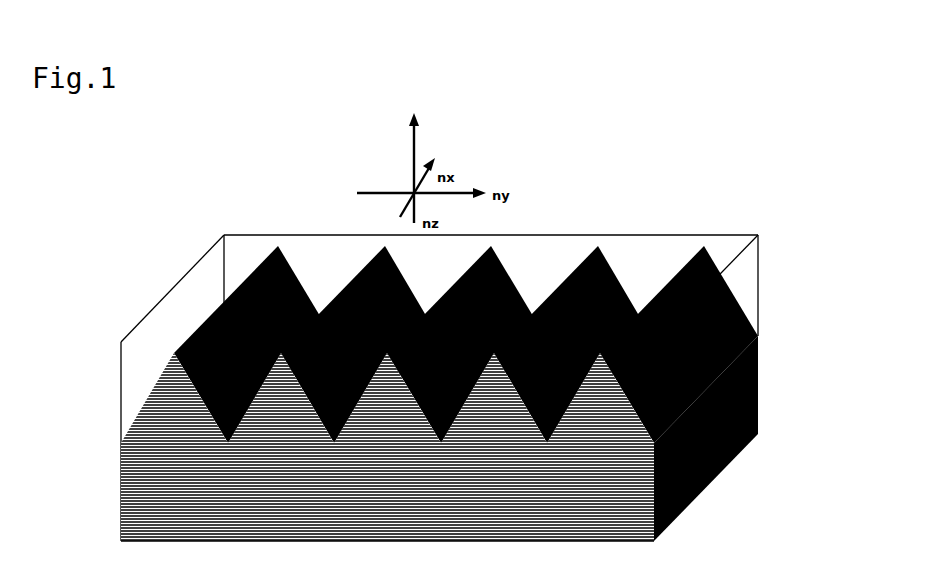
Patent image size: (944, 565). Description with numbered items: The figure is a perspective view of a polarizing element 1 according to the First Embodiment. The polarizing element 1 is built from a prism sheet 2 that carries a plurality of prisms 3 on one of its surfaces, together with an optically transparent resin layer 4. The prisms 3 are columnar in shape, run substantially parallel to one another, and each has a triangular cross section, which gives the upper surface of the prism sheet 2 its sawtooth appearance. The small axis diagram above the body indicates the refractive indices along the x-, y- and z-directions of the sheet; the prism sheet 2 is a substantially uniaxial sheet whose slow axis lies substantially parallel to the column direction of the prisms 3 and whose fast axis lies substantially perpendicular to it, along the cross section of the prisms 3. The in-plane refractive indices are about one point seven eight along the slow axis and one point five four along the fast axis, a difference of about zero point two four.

The polarizing element 1 is at (716, 216).
The prism sheet 2 is at (730, 467).
The prisms 3 is at (479, 344).
The optically transparent resin layer 4 is at (743, 283).